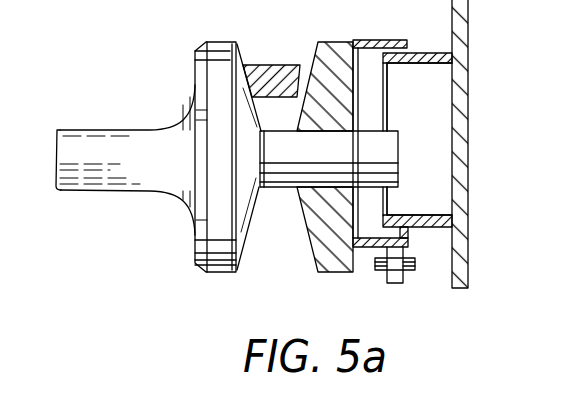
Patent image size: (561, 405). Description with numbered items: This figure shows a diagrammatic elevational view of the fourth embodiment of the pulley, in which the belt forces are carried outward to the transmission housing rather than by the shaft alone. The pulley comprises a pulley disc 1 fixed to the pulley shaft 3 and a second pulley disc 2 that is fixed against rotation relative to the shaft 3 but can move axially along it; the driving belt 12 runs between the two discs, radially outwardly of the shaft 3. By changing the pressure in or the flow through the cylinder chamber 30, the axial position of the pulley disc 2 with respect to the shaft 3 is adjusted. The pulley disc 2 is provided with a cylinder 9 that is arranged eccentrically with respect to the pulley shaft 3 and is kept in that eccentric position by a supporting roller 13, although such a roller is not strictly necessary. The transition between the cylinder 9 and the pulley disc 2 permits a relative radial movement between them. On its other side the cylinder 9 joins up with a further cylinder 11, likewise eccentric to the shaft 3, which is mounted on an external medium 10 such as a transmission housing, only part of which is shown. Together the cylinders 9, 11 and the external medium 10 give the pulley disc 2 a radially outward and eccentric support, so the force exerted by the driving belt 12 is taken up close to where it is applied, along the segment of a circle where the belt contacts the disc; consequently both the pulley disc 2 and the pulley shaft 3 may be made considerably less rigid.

The pulley disc 1 is at (216, 42).
The pulley disc 2 is at (318, 42).
The pulley shaft 3 is at (335, 158).
The cylinder 9 is at (366, 40).
The external medium 10 is at (466, 143).
The cylinder 11 is at (420, 53).
The driving belt 12 is at (265, 65).
The supporting roller 13 is at (401, 283).
The cylinder chamber 30 is at (403, 108).